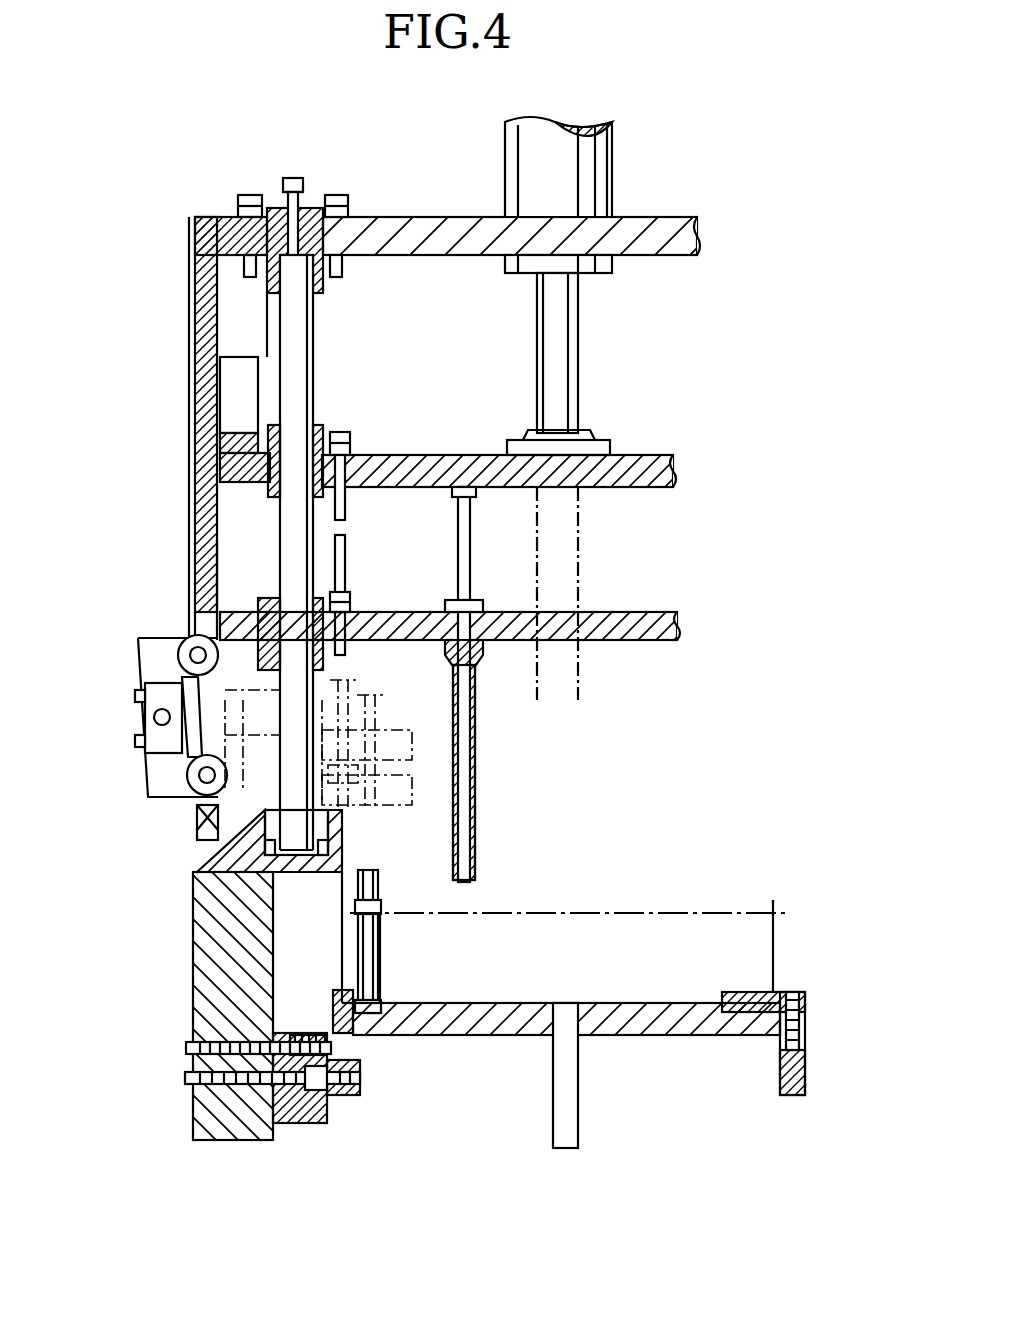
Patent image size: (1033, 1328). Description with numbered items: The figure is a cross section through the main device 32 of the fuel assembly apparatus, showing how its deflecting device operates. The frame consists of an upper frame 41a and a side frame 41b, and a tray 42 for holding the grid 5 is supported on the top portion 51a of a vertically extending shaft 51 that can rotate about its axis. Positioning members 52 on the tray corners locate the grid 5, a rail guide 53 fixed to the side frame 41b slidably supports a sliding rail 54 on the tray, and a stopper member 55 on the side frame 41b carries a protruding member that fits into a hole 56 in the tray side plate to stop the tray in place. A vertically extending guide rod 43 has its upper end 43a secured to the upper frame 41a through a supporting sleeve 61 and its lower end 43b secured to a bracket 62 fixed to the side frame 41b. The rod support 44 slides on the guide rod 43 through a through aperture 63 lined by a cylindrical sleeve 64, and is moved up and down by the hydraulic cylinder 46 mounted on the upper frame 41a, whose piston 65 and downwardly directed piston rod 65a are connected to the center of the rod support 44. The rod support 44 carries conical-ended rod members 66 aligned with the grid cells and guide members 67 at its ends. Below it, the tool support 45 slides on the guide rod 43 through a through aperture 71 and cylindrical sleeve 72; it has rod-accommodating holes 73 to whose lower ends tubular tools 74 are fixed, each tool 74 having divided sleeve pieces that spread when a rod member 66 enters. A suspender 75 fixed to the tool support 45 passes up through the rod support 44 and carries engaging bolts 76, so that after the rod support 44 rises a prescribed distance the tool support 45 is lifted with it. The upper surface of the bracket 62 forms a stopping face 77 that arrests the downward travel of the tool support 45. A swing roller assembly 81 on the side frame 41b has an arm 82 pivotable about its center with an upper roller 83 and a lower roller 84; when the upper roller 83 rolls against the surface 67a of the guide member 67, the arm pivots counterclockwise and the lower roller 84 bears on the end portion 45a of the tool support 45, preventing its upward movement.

The main device 32 is at (692, 184).
The upper frame 41a is at (415, 217).
The side frame 41b is at (215, 957).
The tray 42 is at (640, 1035).
The guide rod 43 is at (300, 365).
The upper bushing 43a is at (318, 305).
The lower end of shaft 43b is at (268, 856).
The rod support 44 is at (633, 470).
The tool support 45 is at (628, 630).
The end portion of the tool support 45a is at (195, 540).
The hydraulic cylinder 46 is at (614, 152).
The grid 5 is at (598, 940).
The shaft 51 is at (578, 1122).
The top portion of the shaft 51a is at (540, 1036).
The positioning member 52 is at (338, 995).
The rail guide 53 is at (315, 1123).
The sliding rail 54 is at (345, 1095).
The stopper member 55 is at (305, 1033).
The hole 56 is at (352, 1062).
The supporting sleeve 61 is at (285, 210).
The bracket 62 is at (322, 872).
The through aperture 63 is at (280, 490).
The cylindrical sleeve 64 is at (322, 430).
The piston rod 65 is at (560, 312).
The piston rod 65a is at (600, 470).
The rod member 66 is at (465, 590).
The guide member 67 is at (238, 380).
The surface of the guide member 67a is at (190, 400).
The through aperture 71 is at (305, 610).
The cylindrical sleeve 72 is at (213, 605).
The rod-accommodating hole 73 is at (480, 680).
The tool 74 is at (476, 787).
The suspender 75 is at (345, 515).
The engaging bolt 76 is at (352, 440).
The stopping face 77 is at (196, 812).
The swing roller assembly 81 is at (135, 636).
The arm 82 is at (145, 740).
The upper roller 83 is at (180, 648).
The lower roller 84 is at (185, 775).